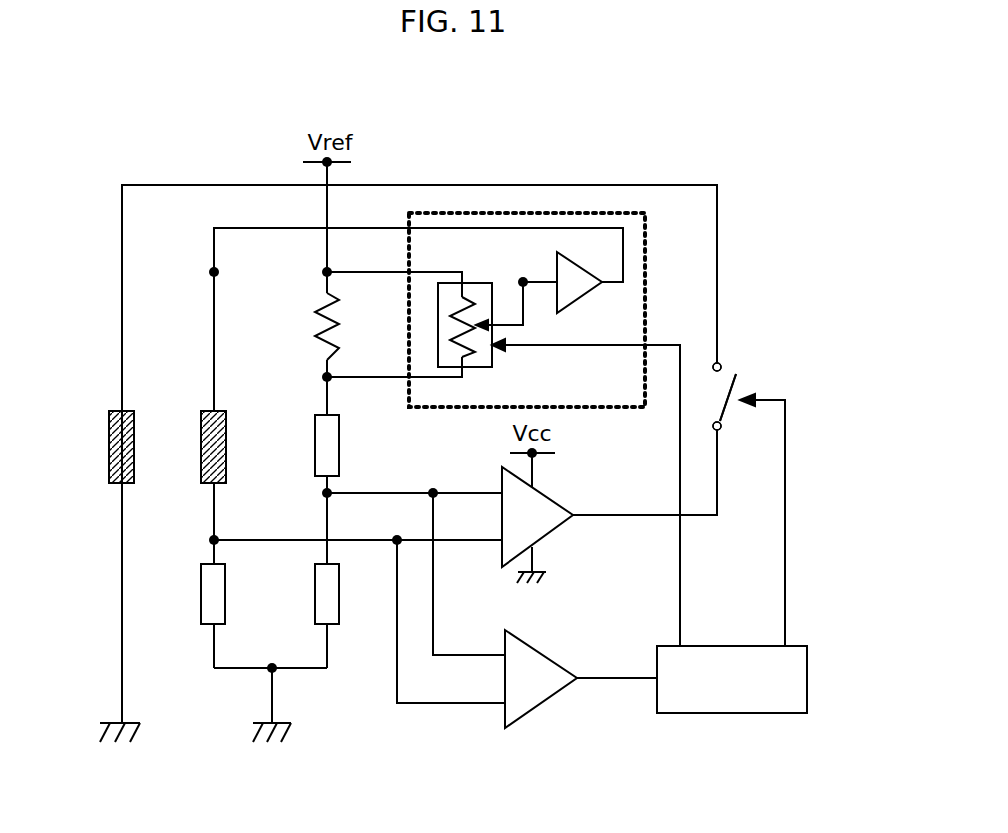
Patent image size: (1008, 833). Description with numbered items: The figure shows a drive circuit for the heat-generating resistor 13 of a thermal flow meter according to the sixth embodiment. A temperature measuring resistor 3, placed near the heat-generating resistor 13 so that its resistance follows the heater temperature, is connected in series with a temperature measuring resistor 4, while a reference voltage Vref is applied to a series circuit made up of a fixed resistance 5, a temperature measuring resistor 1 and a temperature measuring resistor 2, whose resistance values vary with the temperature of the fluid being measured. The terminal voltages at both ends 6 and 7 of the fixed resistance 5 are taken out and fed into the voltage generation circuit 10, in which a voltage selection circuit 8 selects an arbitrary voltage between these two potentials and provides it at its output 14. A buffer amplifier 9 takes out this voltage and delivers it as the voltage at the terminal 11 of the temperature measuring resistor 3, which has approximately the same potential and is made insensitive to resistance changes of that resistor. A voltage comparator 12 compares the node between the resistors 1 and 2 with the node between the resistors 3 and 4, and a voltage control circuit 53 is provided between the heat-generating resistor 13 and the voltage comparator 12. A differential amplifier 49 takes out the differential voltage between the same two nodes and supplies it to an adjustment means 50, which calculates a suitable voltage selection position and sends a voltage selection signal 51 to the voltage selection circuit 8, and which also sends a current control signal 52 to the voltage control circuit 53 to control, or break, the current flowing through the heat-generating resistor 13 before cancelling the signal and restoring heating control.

The temperature measuring resistor 1 is at (315, 458).
The temperature measuring resistor 2 is at (315, 610).
The temperature measuring resistor 3 is at (201, 445).
The temperature measuring resistor 4 is at (201, 600).
The fixed resistance 5 is at (320, 320).
The end of the fixed resistance 6 is at (322, 272).
The end of the fixed resistance 7 is at (322, 377).
The voltage selection circuit 8 is at (477, 360).
The buffer amplifier 9 is at (572, 262).
The voltage generation circuit 10 is at (628, 213).
The terminal 11 is at (210, 270).
The voltage comparator 12 is at (543, 517).
The heat-generating resistor 13 is at (109, 445).
The output 14 is at (520, 277).
The differential amplifier 49 is at (543, 688).
The adjustment means 50 is at (748, 693).
The voltage selection signal 51 is at (682, 563).
The current control signal 52 is at (786, 497).
The voltage control circuit 53 is at (745, 388).